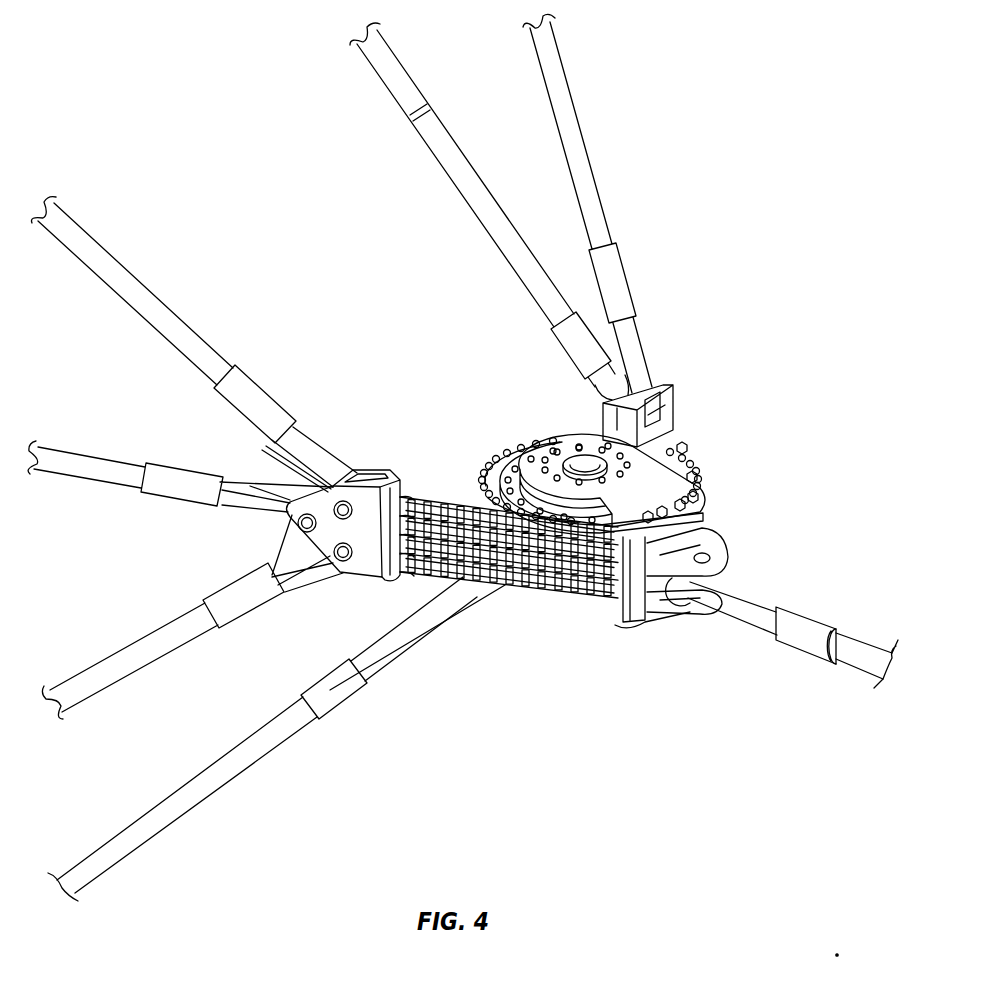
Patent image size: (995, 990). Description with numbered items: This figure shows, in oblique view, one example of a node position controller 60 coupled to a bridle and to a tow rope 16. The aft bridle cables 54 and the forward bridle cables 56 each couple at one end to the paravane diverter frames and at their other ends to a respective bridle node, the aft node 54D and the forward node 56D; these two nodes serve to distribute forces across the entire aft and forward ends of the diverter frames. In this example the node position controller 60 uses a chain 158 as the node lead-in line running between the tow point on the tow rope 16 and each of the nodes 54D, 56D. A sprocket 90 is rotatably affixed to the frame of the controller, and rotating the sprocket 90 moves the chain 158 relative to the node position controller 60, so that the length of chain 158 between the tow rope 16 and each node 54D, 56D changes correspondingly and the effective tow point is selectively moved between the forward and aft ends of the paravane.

The tow rope 16 is at (857, 673).
The aft bridle cables 54 is at (463, 193).
The aft node 54D is at (667, 397).
The forward bridle cables 56 is at (141, 281).
The forward node 56D is at (366, 468).
The node position controller 60 is at (584, 667).
The sprocket 90 is at (497, 460).
The chain 158 is at (523, 591).